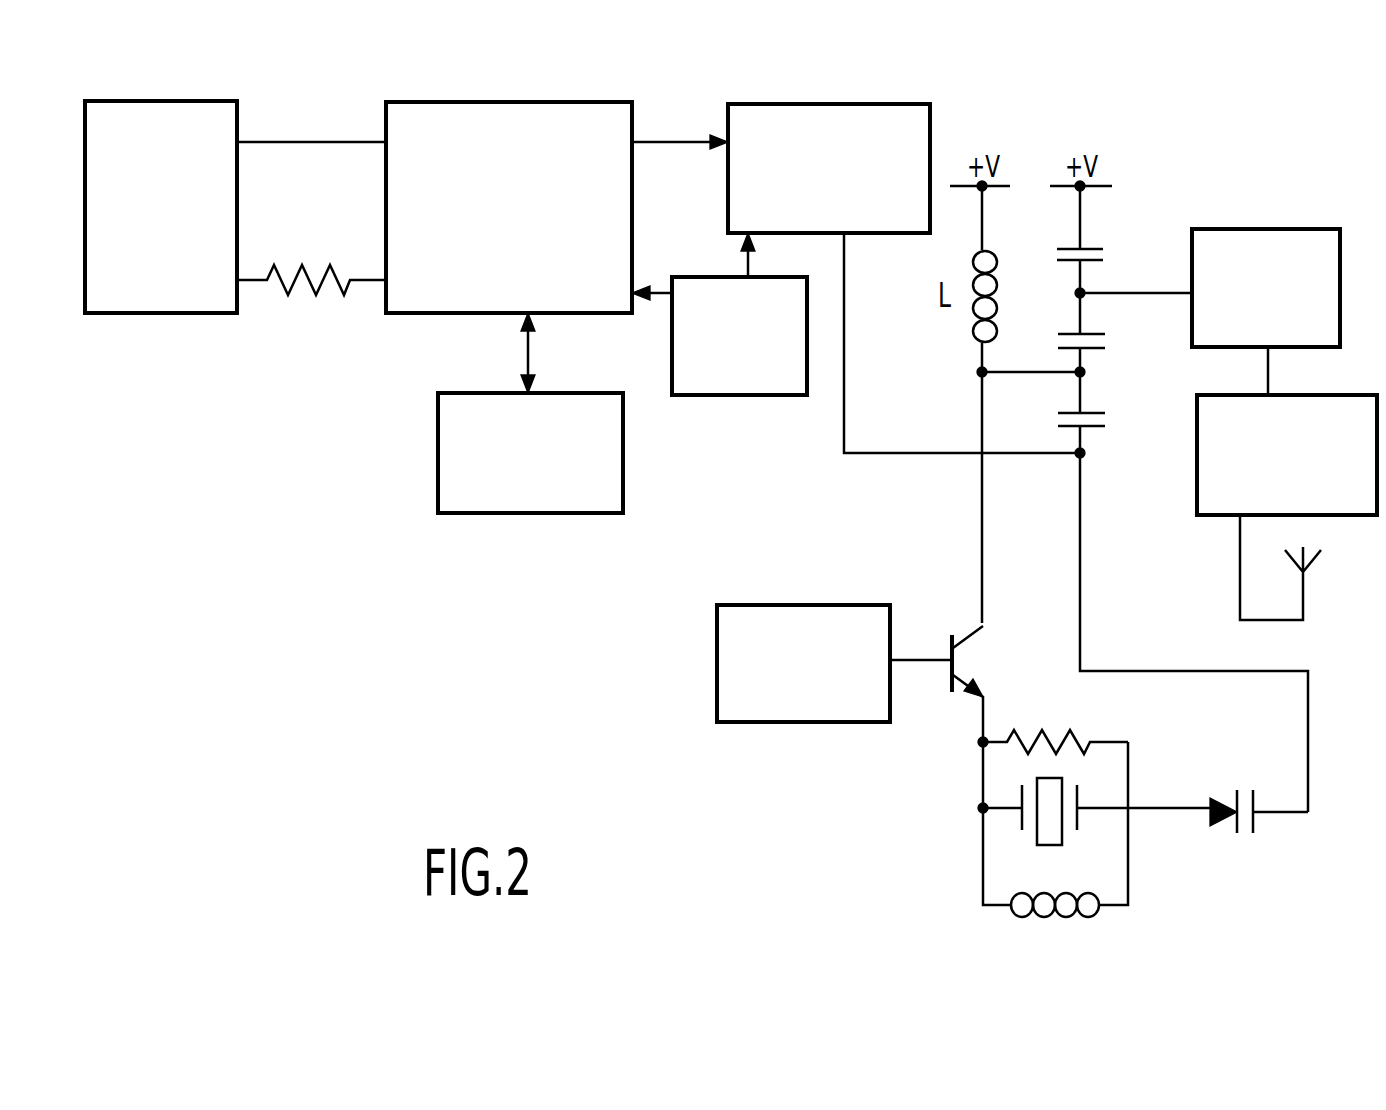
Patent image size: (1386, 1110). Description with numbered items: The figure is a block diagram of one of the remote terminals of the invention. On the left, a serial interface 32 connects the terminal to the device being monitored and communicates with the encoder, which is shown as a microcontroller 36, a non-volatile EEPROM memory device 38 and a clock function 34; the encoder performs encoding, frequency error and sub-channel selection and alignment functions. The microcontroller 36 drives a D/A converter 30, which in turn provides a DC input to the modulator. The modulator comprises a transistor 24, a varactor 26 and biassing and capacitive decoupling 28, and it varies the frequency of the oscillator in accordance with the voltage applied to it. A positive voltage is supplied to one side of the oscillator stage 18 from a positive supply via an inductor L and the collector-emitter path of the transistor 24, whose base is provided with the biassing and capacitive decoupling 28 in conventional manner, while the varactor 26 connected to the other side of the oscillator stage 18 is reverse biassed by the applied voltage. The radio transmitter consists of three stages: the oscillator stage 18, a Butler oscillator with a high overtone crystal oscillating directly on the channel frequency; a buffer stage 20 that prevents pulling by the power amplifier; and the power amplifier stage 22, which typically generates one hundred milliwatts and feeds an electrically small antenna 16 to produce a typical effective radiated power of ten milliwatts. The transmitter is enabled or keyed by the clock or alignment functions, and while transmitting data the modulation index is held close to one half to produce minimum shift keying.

The antenna 16 is at (1312, 568).
The oscillator stage 18 is at (882, 849).
The buffer stage 20 is at (1275, 229).
The power amplifier (PA) stage 22 is at (1205, 487).
The transistor 24 is at (980, 665).
The varactor 26 is at (1213, 820).
The biassing and capacitive decoupling 28 is at (717, 640).
The D/A converter 30 is at (772, 104).
The serial interface 32 is at (183, 100).
The clock function 34 is at (754, 385).
The microcontroller 36 is at (468, 101).
The non-volatile (EEPROM) memory device 38 is at (438, 458).